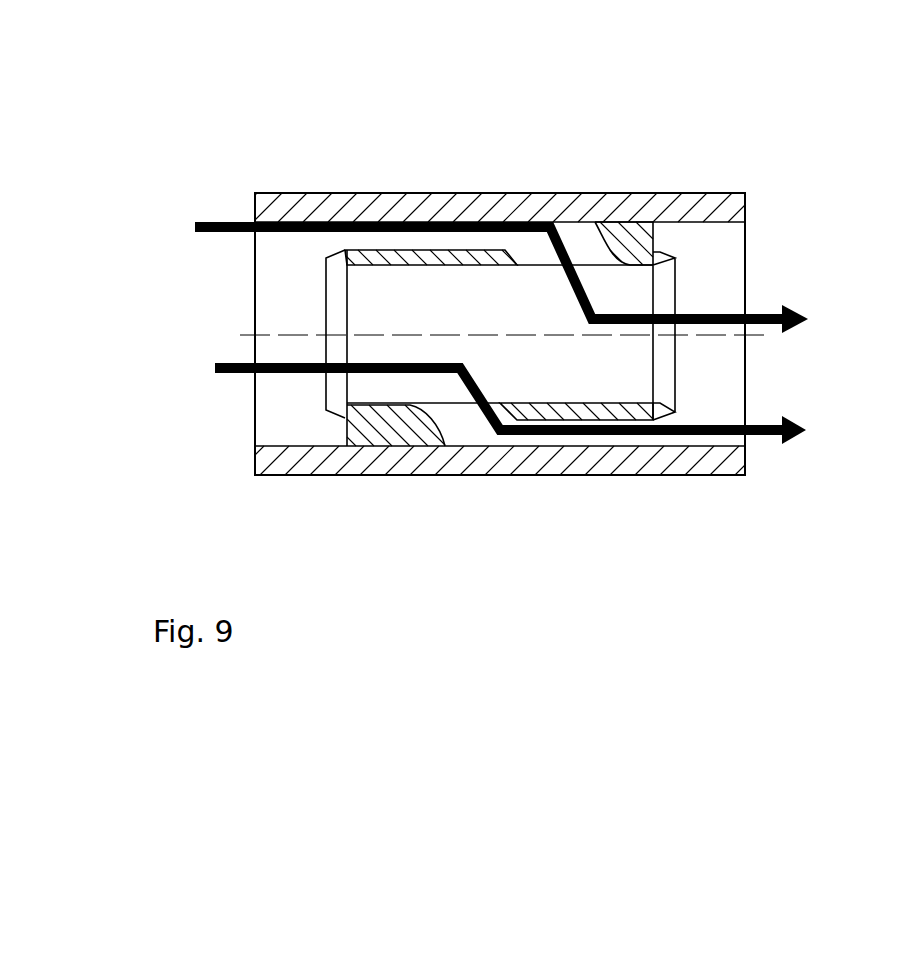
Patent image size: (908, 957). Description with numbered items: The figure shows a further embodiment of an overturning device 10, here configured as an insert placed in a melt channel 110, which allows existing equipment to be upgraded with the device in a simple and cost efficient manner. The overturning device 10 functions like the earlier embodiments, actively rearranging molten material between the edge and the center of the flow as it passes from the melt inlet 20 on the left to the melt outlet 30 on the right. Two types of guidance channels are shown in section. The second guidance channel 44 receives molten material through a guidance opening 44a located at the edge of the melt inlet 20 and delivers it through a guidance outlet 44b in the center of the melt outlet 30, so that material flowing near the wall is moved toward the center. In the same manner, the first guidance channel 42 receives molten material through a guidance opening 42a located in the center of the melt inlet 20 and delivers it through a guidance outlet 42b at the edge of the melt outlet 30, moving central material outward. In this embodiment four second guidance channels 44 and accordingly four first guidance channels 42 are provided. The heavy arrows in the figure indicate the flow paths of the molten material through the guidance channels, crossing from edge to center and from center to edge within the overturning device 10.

The overturning device 10 is at (466, 206).
The melt channel 110 is at (272, 193).
The melt inlet 20 is at (258, 304).
The melt outlet 30 is at (732, 282).
The first guidance channel 42 is at (477, 285).
The guidance opening of first guidance channel 42a is at (326, 355).
The guidance outlet of first guidance channel 42b is at (652, 440).
The second guidance channel 44 is at (532, 236).
The guidance opening of second guidance channel 44a is at (355, 231).
The guidance outlet of second guidance channel 44b is at (644, 297).